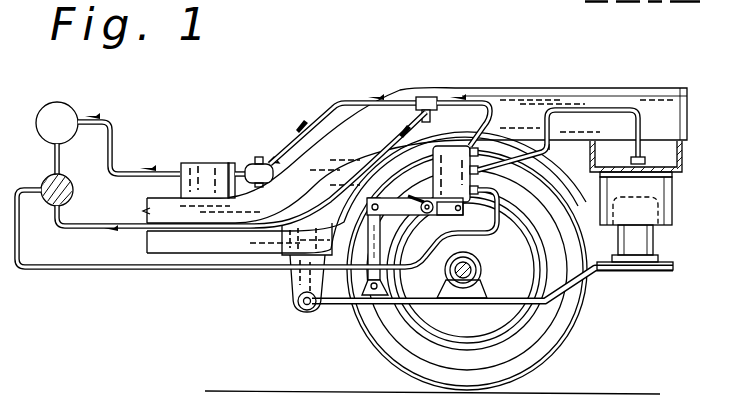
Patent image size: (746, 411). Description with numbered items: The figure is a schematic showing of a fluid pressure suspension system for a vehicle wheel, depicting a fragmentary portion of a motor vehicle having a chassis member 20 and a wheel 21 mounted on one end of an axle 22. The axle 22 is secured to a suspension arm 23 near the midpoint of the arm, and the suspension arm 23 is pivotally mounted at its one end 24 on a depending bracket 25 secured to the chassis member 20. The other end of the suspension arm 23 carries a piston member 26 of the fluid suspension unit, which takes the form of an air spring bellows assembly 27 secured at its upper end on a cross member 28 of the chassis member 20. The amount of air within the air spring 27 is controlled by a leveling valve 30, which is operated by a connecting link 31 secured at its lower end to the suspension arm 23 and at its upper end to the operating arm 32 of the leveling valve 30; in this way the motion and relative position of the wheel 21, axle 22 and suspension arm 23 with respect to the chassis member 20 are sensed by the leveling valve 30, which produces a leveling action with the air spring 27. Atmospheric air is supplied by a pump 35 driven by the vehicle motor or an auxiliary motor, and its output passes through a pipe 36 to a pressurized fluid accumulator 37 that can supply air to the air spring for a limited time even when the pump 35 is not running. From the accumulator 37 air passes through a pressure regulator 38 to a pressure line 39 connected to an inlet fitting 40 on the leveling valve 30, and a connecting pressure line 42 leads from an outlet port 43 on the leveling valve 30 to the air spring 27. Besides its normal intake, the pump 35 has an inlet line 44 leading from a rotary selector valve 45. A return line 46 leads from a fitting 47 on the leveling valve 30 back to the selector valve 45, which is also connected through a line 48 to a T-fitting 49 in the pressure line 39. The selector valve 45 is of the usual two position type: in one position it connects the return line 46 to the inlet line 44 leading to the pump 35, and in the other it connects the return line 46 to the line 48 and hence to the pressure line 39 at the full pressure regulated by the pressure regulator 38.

The chassis member 20 is at (528, 100).
The wheel 21 is at (548, 345).
The axle 22 is at (475, 268).
The suspension arm 23 is at (563, 293).
The one end of suspension arm 24 is at (301, 312).
The depending bracket 25 is at (293, 278).
The piston member 26 is at (653, 243).
The air spring bellows assembly 27 is at (667, 192).
The cross member 28 is at (683, 150).
The leveling valve 30 is at (430, 173).
The connecting link 31 is at (375, 232).
The operating arm 32 is at (390, 206).
The pump 35 is at (43, 109).
The pipe 36 is at (113, 148).
The fluid accumulator 37 is at (204, 170).
The pressure regulator 38 is at (258, 157).
The pressure line 39 is at (350, 100).
The inlet fitting 40 is at (481, 146).
The connecting pressure line 42 is at (598, 108).
The outlet port 43 is at (482, 176).
The inlet line 44 is at (50, 157).
The rotary selector valve 45 is at (72, 187).
The return line 46 is at (102, 267).
The fitting 47 is at (500, 196).
The line 48 is at (109, 227).
The T-fitting 49 is at (428, 96).